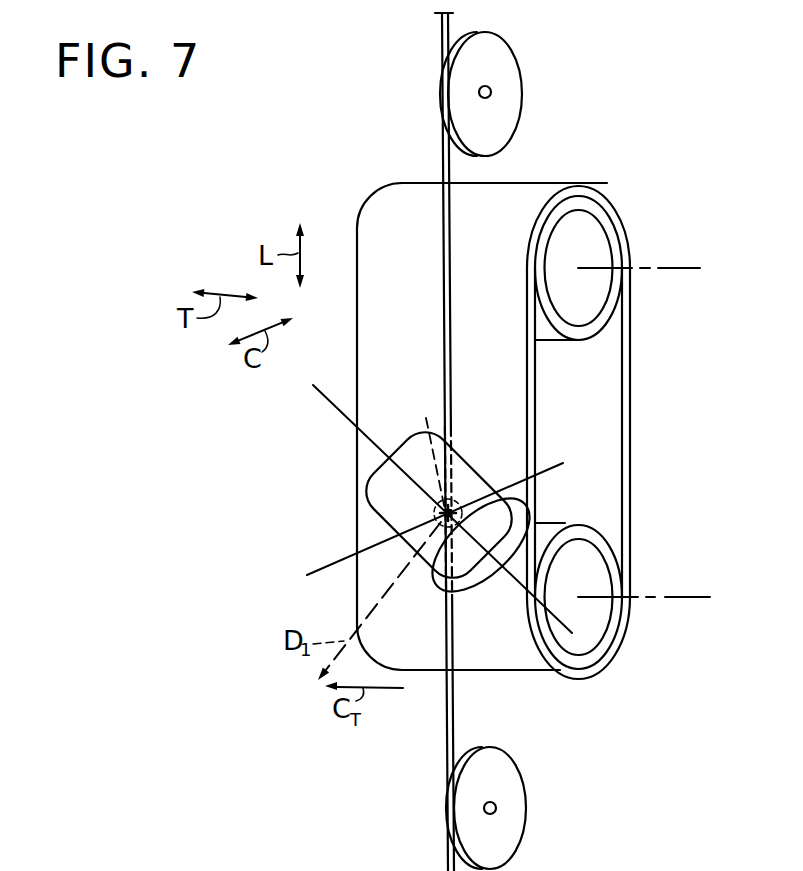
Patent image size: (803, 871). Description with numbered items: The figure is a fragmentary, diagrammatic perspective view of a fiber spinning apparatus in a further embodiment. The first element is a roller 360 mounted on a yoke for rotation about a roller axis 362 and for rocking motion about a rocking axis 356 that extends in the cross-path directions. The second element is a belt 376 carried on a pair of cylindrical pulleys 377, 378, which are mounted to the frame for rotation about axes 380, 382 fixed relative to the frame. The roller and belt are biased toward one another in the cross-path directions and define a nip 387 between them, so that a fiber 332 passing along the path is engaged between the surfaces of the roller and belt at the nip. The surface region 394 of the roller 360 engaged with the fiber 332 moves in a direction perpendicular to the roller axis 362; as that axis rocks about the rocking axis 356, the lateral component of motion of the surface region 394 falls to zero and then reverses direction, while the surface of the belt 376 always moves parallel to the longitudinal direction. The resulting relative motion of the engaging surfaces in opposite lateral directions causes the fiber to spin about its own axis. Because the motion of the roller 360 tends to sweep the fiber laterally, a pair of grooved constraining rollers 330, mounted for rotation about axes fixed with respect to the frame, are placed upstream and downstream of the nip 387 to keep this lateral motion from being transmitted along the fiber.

The grooved constraining rollers 330 is at (514, 88).
The fiber 332 is at (444, 306).
The rocking axis 356 is at (548, 474).
The roller 360 is at (379, 497).
The roller axis 362 is at (337, 410).
The belt 376 is at (548, 397).
The cylindrical pulley 377 is at (596, 330).
The cylindrical pulley 378 is at (607, 548).
The pulley axis 380 is at (670, 264).
The pulley axis 382 is at (693, 607).
The nip 387 is at (472, 432).
The surface region 394 is at (426, 418).